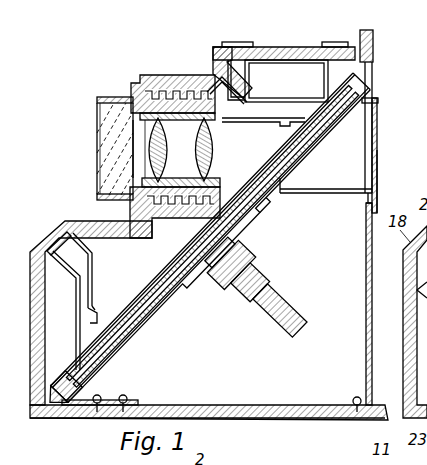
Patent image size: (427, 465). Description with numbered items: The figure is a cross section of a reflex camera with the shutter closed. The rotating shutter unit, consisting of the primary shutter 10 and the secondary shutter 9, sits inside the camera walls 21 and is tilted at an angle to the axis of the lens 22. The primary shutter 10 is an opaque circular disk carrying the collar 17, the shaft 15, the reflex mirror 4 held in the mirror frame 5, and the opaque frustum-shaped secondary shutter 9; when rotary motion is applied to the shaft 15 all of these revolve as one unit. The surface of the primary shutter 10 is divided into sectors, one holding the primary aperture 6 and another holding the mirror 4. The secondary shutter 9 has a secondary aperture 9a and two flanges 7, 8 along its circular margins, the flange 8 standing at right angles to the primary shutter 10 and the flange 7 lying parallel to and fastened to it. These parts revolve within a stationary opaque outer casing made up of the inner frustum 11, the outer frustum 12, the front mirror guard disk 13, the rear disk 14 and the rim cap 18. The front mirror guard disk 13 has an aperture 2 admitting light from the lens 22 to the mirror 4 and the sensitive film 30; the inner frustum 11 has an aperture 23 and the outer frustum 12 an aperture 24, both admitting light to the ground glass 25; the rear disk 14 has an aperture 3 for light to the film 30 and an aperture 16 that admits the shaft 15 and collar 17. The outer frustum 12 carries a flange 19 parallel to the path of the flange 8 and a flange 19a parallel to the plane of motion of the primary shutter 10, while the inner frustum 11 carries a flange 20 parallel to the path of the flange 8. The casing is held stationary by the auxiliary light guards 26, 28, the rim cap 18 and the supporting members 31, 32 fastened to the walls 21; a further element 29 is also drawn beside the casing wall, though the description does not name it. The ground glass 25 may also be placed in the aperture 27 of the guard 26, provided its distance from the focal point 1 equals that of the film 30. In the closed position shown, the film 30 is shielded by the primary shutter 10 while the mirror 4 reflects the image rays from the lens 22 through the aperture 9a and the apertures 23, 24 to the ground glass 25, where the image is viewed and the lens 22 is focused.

The focal point 1 is at (210, 237).
The aperture 2 is at (266, 162).
The aperture 3 is at (292, 166).
The reflex mirror 4 is at (313, 148).
The mirror frame 5 is at (334, 134).
The primary aperture 6 is at (145, 324).
The flange 7 is at (64, 362).
The flange 8 is at (72, 279).
The secondary shutter 9 is at (84, 300).
The secondary aperture 9a is at (379, 101).
The primary shutter 10 is at (336, 154).
The inner frustum 11 is at (92, 268).
The outer frustum 12 is at (92, 292).
The front mirror guard disk 13 is at (162, 271).
The rear disk 14 is at (258, 218).
The shaft 15 is at (294, 305).
The aperture 16 is at (250, 259).
The collar 17 is at (272, 283).
The rim cap 18 is at (212, 72).
The flange 19 is at (48, 254).
The flange 19a is at (57, 419).
The flange 20 is at (60, 262).
The walls 21 is at (164, 82).
The lens 22 is at (150, 160).
The aperture 23 is at (248, 112).
The aperture 24 is at (288, 118).
The ground glass 25 is at (257, 60).
The auxiliary light guard 26 is at (323, 60).
The aperture 27 is at (280, 60).
The auxiliary light guard 28 is at (373, 95).
The wall 29 is at (378, 124).
The sensitive film 30 is at (378, 153).
The supporting member 31 is at (373, 66).
The supporting member 32 is at (132, 400).